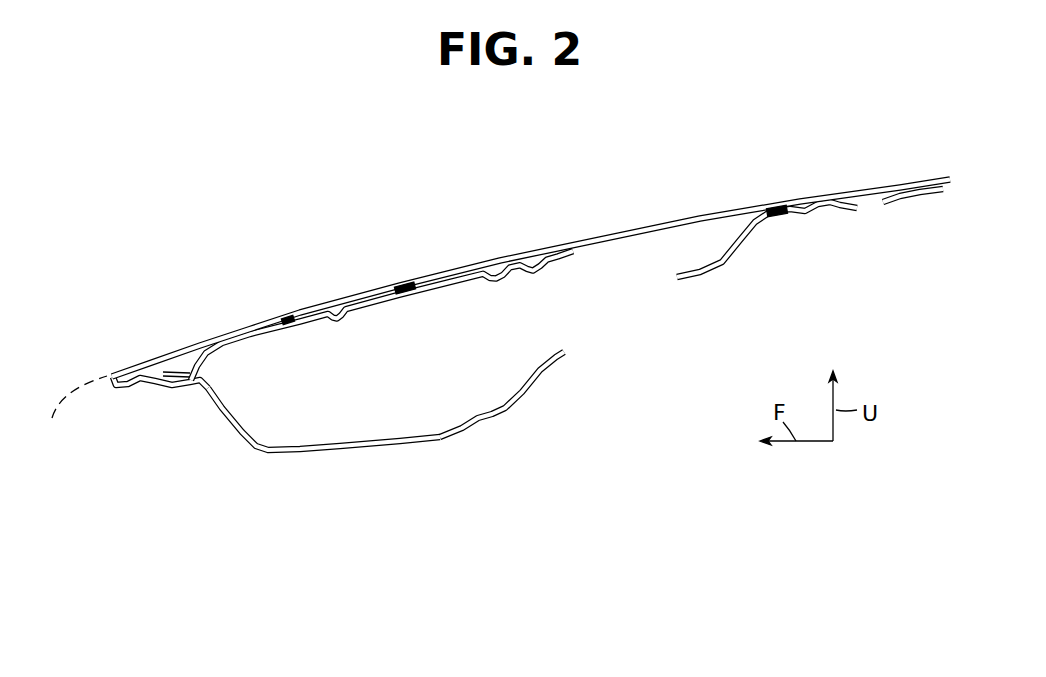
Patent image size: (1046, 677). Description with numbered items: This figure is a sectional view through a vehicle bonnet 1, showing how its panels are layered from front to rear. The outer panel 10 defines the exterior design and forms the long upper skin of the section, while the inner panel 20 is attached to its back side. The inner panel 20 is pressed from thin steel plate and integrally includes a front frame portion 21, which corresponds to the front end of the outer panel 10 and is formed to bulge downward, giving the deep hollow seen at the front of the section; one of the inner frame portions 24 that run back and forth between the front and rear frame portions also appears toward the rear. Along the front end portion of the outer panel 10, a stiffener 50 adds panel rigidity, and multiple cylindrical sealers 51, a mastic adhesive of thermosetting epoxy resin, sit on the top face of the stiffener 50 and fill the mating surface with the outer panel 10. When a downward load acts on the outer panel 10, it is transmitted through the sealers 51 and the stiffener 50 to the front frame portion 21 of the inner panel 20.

The bonnet 1 is at (687, 153).
The bonnet outer panel 10 is at (486, 262).
The bonnet inner panel 20 is at (387, 458).
The front frame portion 21 is at (290, 452).
The inner frame portion 24 is at (925, 195).
The stiffener 50 is at (450, 282).
The sealer 51 is at (288, 324).